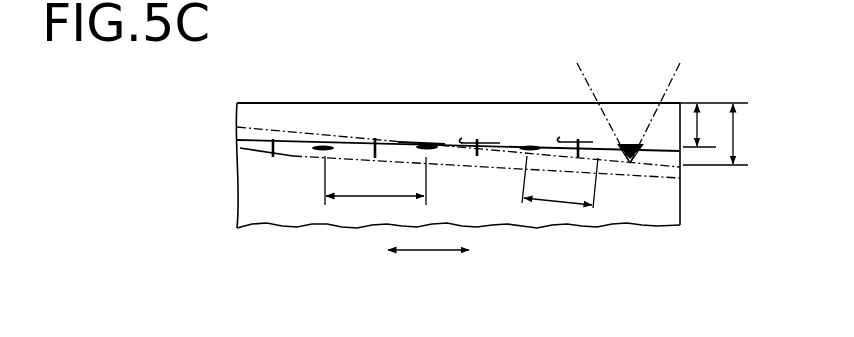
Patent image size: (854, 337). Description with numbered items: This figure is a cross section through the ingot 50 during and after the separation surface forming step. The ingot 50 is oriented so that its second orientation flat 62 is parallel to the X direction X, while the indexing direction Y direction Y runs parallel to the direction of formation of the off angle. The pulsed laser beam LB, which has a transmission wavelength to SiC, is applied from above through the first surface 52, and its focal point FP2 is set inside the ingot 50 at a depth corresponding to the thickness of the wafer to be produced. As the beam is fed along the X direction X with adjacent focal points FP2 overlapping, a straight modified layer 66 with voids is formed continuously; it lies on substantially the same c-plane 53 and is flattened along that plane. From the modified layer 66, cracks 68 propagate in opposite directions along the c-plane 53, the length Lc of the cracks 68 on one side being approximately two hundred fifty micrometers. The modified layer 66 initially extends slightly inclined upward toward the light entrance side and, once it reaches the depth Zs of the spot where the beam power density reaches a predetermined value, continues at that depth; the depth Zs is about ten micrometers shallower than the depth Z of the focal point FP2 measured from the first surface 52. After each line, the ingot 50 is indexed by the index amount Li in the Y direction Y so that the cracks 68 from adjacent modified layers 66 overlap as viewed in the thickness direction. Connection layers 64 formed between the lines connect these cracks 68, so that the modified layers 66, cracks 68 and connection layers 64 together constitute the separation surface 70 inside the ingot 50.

The ingot 50 is at (266, 100).
The first surface 52 is at (528, 101).
The c-plane 53 is at (495, 168).
The second orientation flat 62 is at (683, 195).
The connection layer 64 is at (368, 140).
The modified layer 66 is at (333, 146).
The cracks 68 is at (495, 102).
The separation surface 70 is at (458, 88).
The pulsed laser beam LB is at (678, 73).
The focal point FP2 is at (630, 165).
The depth of spot Zs is at (703, 125).
The depth of focal point Z is at (715, 134).
The index amount Li is at (375, 180).
The length of cracks Lc is at (560, 182).
The X direction X is at (426, 6).
The Y direction Y is at (428, 264).